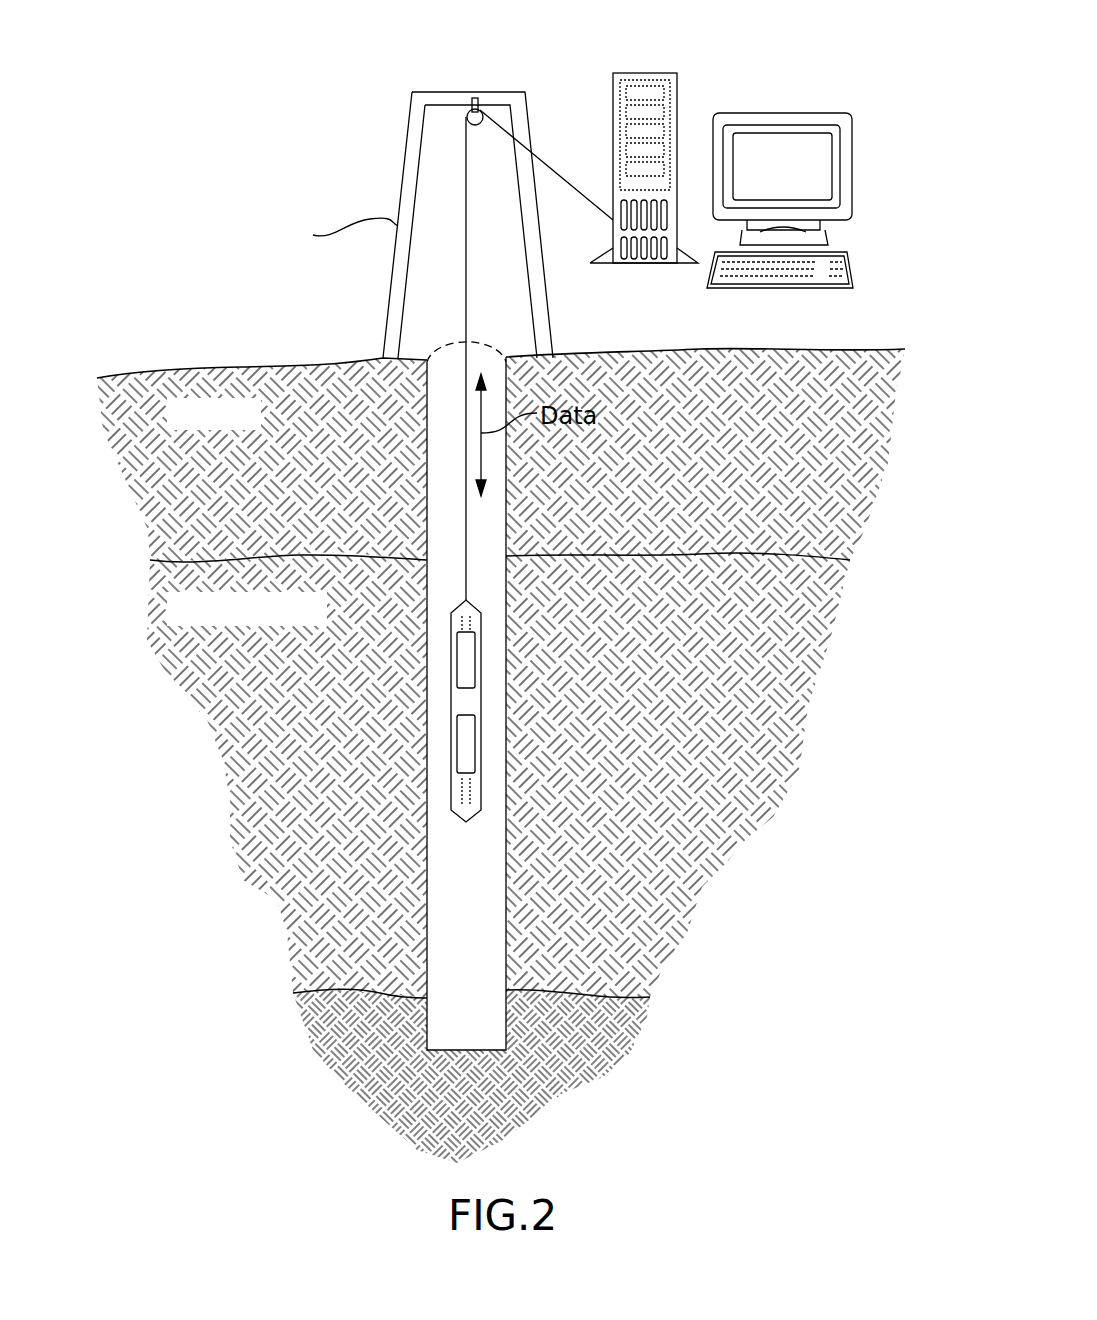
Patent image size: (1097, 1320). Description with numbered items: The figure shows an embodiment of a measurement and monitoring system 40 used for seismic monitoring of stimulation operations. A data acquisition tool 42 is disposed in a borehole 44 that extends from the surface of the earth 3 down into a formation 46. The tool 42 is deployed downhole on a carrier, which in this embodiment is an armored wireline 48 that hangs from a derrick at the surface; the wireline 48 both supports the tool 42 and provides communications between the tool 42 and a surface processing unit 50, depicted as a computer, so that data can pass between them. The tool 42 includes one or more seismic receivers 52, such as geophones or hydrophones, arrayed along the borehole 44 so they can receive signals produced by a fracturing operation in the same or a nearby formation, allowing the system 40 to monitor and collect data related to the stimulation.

The measurement and/or monitoring system 40 is at (223, 139).
The surface processing unit 50 is at (613, 100).
The borehole 44 is at (427, 400).
The earth 3 is at (256, 428).
The armored wireline 48 is at (466, 490).
The formation 46 is at (323, 622).
The data acquisition tool 42 is at (478, 608).
The seismic receivers 52 is at (457, 662).